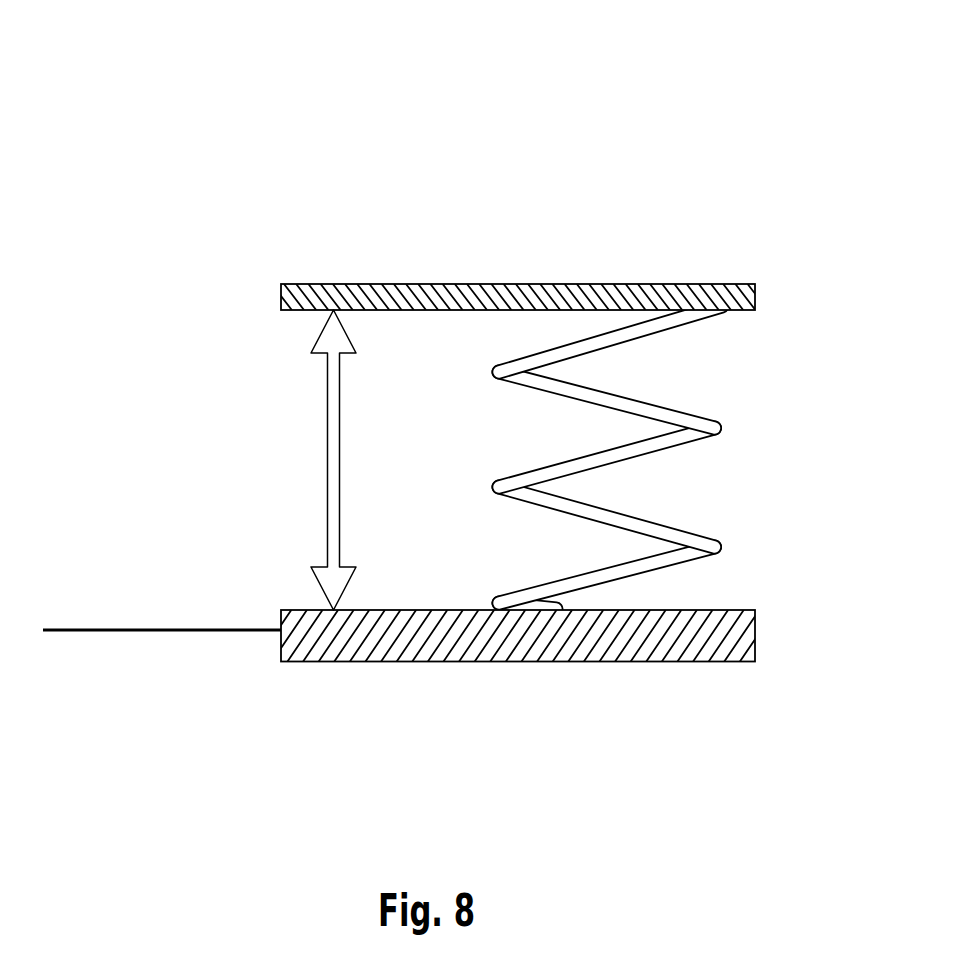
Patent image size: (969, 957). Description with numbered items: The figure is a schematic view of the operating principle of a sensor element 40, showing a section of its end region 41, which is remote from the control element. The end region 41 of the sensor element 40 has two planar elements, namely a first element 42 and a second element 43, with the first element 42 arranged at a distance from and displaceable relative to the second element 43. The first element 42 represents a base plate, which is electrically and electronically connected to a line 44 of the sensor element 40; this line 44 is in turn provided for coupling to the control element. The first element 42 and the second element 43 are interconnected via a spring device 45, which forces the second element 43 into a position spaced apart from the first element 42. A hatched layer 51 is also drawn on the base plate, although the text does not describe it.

The sensor element 40 is at (271, 204).
The end region 41 is at (562, 253).
The first element 42 is at (516, 681).
The second element 43 is at (450, 300).
The line 44 is at (200, 632).
The spring device 45 is at (627, 452).
The lower electrode layer 51 is at (447, 630).